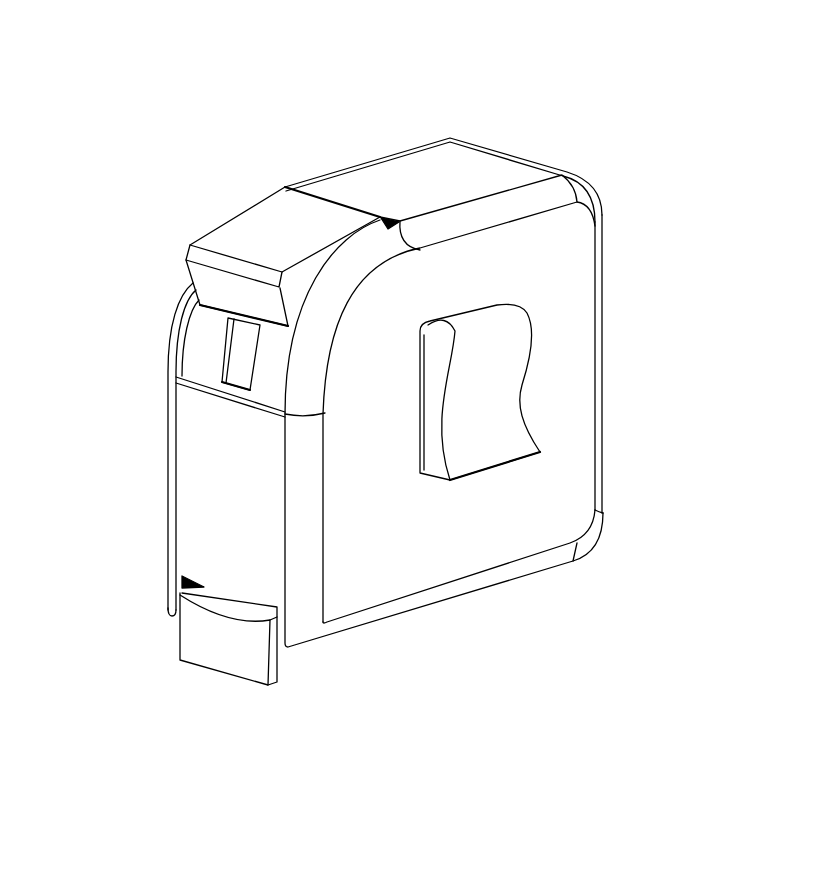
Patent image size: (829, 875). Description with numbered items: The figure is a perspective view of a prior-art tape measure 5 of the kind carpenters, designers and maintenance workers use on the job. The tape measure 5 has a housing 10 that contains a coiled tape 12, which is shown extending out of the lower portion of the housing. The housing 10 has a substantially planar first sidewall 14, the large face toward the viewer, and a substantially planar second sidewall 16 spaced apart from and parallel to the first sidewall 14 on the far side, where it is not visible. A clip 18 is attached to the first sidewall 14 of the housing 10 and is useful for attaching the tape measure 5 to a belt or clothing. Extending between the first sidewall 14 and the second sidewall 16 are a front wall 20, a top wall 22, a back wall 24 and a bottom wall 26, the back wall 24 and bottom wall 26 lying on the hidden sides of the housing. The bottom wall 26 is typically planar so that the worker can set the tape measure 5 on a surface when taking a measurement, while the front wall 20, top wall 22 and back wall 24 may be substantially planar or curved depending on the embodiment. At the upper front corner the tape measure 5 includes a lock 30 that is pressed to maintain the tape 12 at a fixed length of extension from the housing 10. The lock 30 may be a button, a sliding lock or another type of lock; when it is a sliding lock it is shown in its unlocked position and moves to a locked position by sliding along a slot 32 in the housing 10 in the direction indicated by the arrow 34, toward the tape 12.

The tape measure 5 is at (622, 108).
The housing 10 is at (600, 347).
The tape 12 is at (233, 603).
The first sidewall 14 is at (540, 505).
The second sidewall 16 is at (166, 338).
The clip 18 is at (513, 343).
The front wall 20 is at (203, 473).
The top wall 22 is at (428, 163).
The back wall 24 is at (606, 429).
The bottom wall 26 is at (422, 617).
The lock 30 is at (278, 220).
The slot 32 is at (227, 360).
The arrow 34 is at (190, 203).